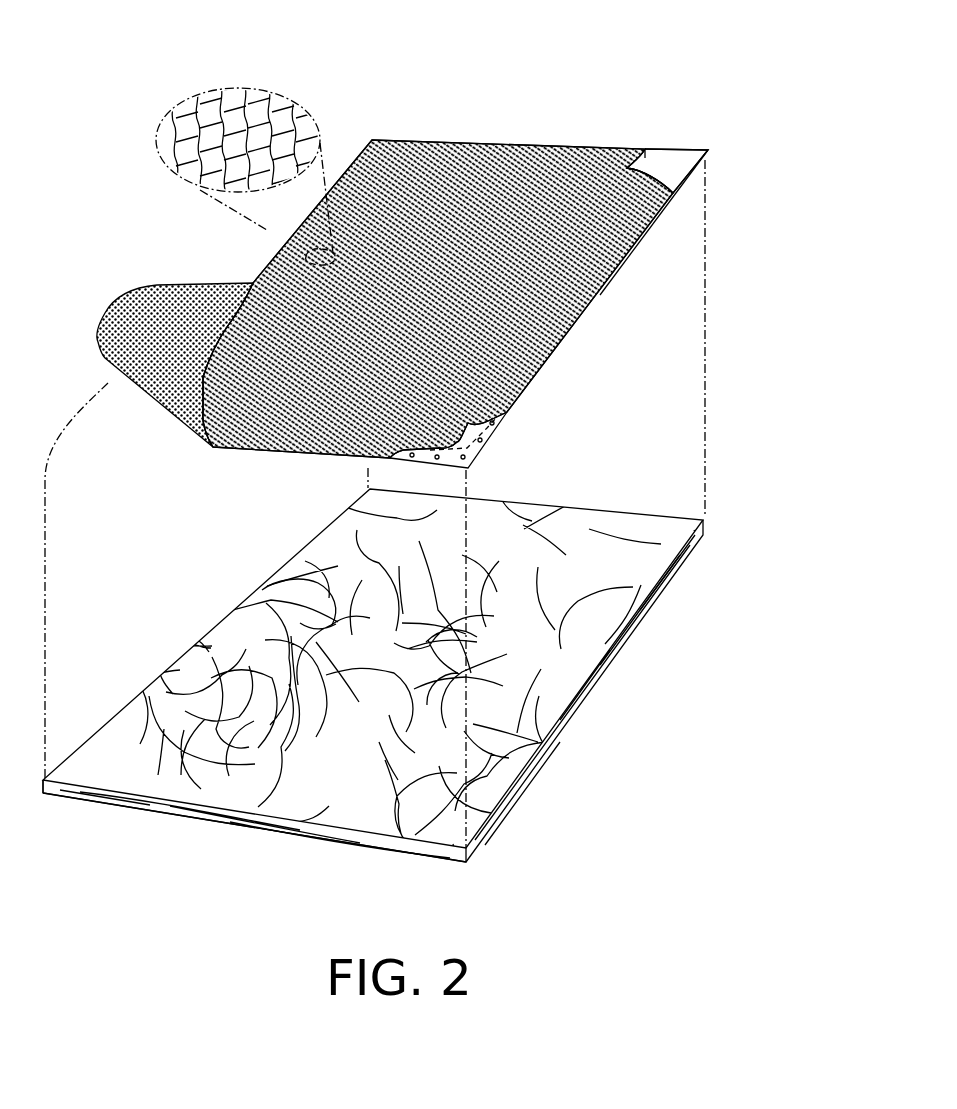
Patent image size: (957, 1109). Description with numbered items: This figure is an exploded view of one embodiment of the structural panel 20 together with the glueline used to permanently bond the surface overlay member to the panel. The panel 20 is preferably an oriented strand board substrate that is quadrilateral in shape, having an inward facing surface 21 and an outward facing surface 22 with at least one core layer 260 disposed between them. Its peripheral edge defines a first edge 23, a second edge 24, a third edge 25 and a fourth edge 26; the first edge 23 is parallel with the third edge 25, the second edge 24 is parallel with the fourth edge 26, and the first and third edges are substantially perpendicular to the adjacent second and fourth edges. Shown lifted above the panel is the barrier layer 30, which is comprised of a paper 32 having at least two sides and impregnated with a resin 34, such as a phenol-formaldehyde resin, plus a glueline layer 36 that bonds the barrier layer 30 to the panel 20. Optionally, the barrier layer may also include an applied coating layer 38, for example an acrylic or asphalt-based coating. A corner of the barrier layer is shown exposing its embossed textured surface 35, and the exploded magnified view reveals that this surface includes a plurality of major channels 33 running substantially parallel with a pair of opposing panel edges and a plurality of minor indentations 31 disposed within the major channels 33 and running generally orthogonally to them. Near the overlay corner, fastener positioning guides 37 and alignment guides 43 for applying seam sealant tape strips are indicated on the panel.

The structural panel 20 is at (667, 612).
The inward facing surface 21 is at (500, 820).
The outward facing surface 22 is at (163, 778).
The first edge 23 is at (333, 838).
The second edge 24 is at (573, 703).
The third edge 25 is at (627, 522).
The fourth edge 26 is at (260, 588).
The core layer 260 is at (253, 823).
The barrier layer 30 is at (368, 110).
The minor indentations 31 is at (170, 138).
The paper 32 is at (677, 160).
The major channels 33 is at (183, 110).
The resin 34 is at (677, 165).
The textured surface 35 is at (232, 76).
The glueline layer 36 is at (150, 320).
The fastener positioning guides 37 is at (481, 441).
The coating layer 38 is at (645, 150).
The alignment guides 43 is at (483, 455).